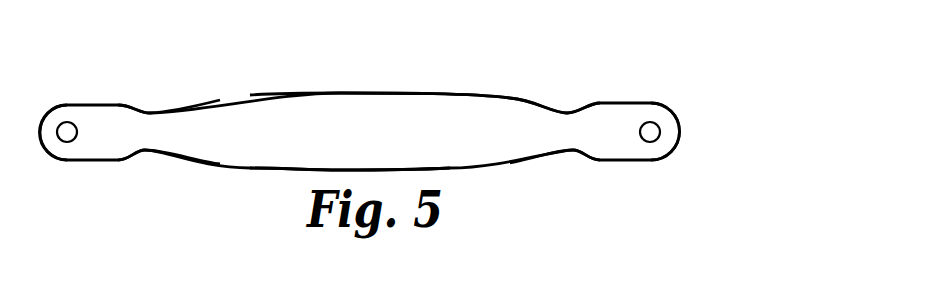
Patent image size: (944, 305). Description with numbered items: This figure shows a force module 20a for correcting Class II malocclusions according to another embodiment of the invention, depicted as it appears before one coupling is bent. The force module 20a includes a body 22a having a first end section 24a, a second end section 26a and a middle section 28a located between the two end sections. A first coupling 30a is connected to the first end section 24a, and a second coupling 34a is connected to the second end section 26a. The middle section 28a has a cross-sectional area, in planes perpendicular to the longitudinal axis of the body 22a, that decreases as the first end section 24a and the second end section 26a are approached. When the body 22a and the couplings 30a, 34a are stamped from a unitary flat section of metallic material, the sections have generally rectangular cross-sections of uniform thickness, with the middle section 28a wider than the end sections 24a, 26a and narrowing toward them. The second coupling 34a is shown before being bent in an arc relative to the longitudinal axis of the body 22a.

The force module 20a is at (401, 89).
The body 22a is at (455, 93).
The first end section 24a is at (193, 115).
The second end section 26a is at (540, 118).
The middle section 28a is at (348, 108).
The first coupling 30a is at (83, 115).
The second coupling 34a is at (623, 113).